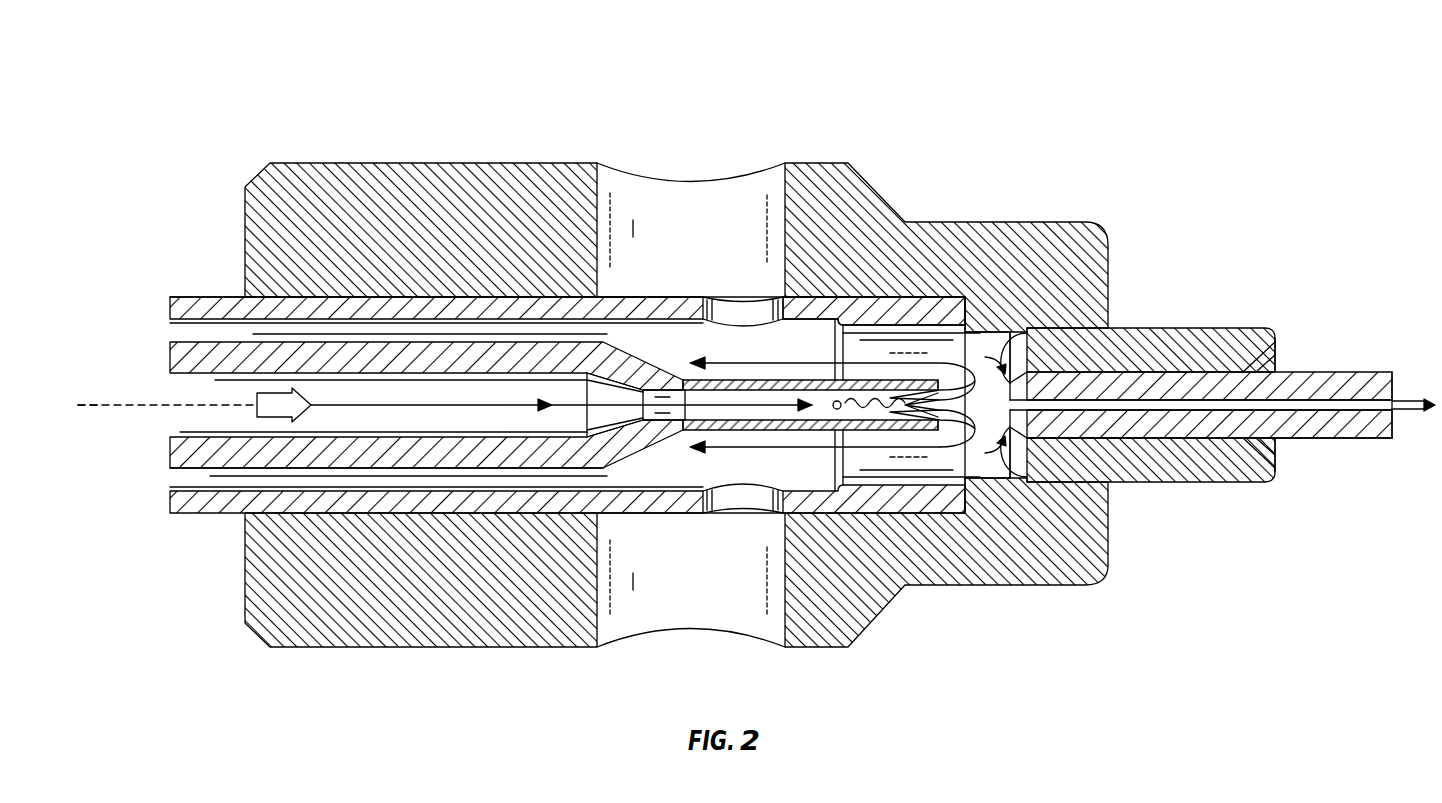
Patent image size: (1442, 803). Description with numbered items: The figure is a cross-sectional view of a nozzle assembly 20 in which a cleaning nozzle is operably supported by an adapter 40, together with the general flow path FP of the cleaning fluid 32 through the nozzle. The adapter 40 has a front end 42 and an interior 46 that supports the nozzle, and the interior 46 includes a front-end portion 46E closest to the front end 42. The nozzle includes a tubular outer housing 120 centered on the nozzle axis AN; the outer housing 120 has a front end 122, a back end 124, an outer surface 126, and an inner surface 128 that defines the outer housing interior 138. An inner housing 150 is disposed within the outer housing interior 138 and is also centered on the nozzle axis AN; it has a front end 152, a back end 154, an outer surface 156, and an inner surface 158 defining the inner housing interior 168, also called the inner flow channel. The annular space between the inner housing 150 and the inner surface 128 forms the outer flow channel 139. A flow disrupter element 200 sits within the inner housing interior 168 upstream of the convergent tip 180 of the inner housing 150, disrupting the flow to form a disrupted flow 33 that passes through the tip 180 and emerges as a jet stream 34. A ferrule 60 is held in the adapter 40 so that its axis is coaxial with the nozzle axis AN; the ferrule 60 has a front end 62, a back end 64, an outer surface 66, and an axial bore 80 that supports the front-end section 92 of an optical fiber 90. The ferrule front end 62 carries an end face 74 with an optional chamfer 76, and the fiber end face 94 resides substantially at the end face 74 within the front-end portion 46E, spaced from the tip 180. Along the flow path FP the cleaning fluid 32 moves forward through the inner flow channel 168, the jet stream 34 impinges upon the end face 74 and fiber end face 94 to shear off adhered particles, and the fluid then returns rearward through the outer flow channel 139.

The nozzle assembly 20 is at (313, 90).
The adapter 40 is at (807, 170).
The back end 124 is at (174, 299).
The outer housing 120 is at (555, 310).
The outer surface 126 is at (222, 296).
The inner surface 128 is at (240, 323).
The inner surface 158 is at (312, 480).
The outer housing interior 138 is at (710, 338).
The outer flow channel 139 is at (480, 330).
The back end 154 is at (174, 348).
The inner housing interior 168 is at (363, 415).
The inner housing 150 is at (178, 467).
The outer surface 156 is at (232, 468).
The cleaning fluid 32 is at (253, 398).
The nozzle axis AN is at (109, 432).
The interior 46 is at (862, 443).
The disrupted flow 33 is at (891, 416).
The front end 152 is at (945, 410).
The tip 180 is at (937, 340).
The jet stream 34 is at (955, 355).
The flow path FP is at (378, 405).
The flow disrupter element 200 is at (797, 450).
The front end 122 is at (997, 335).
The front-end portion 46E is at (1005, 345).
The front end 62 is at (1022, 340).
The chamfer 76 is at (1023, 353).
The end face 74 is at (1010, 420).
The fiber end face 94 is at (1010, 400).
The axial bore 80 is at (1222, 397).
The front end 42 is at (1275, 340).
The ferrule 60 is at (1303, 350).
The front-end section 92 is at (1283, 408).
The outer surface 66 is at (1200, 438).
The back end 64 is at (1392, 433).
The optical fiber 90 is at (1410, 398).